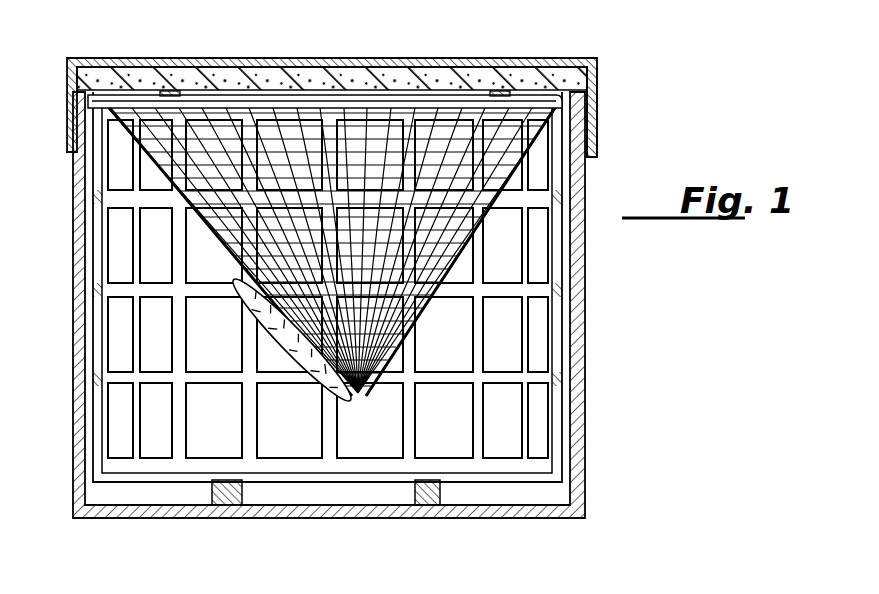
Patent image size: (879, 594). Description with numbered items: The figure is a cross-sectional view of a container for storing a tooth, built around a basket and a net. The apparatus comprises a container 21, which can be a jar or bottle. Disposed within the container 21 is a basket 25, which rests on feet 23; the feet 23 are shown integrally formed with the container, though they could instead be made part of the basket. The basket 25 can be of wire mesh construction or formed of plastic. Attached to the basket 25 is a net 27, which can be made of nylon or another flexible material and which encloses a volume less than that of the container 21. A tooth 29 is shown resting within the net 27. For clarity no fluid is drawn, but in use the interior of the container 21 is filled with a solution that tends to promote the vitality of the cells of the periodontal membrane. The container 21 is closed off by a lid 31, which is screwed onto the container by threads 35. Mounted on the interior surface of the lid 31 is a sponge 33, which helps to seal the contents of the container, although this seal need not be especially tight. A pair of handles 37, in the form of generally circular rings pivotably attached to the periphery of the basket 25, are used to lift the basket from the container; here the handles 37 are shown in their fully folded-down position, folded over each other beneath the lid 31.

The container 21 is at (583, 345).
The feet 23 is at (225, 492).
The basket 25 is at (177, 416).
The net 27 is at (520, 195).
The tooth 29 is at (302, 345).
The lid 31 is at (386, 87).
The sponge 33 is at (450, 80).
The threads 35 is at (592, 128).
The handles 37 is at (277, 97).